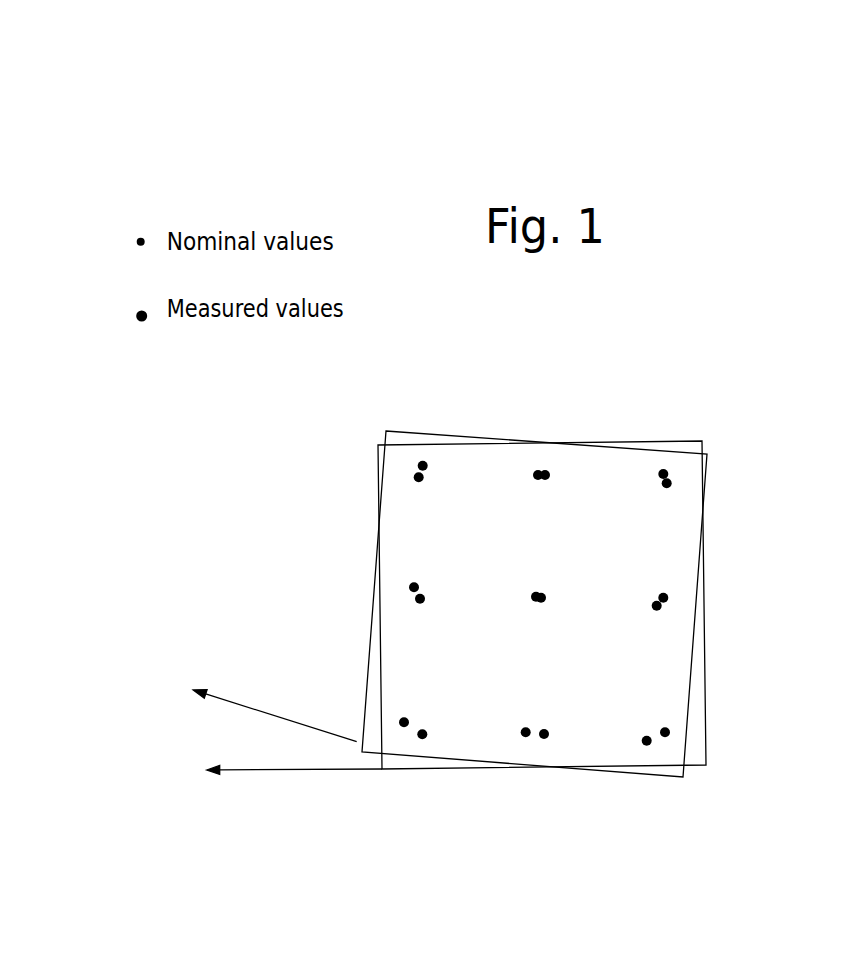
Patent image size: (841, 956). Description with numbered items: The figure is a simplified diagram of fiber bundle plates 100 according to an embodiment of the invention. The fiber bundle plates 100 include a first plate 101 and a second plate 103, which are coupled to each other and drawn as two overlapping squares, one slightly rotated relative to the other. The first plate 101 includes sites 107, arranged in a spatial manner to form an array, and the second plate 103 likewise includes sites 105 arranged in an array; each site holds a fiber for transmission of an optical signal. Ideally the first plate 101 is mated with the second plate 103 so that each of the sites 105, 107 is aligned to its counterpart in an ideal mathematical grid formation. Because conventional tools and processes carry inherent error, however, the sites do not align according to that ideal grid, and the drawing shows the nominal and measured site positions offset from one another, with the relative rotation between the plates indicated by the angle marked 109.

The fiber bundle plates 100 is at (630, 380).
The first plate 101 is at (717, 717).
The second plate 103 is at (425, 421).
The sites 105 is at (687, 475).
The sites 107 is at (677, 582).
The rotation angle theta 109 is at (241, 760).